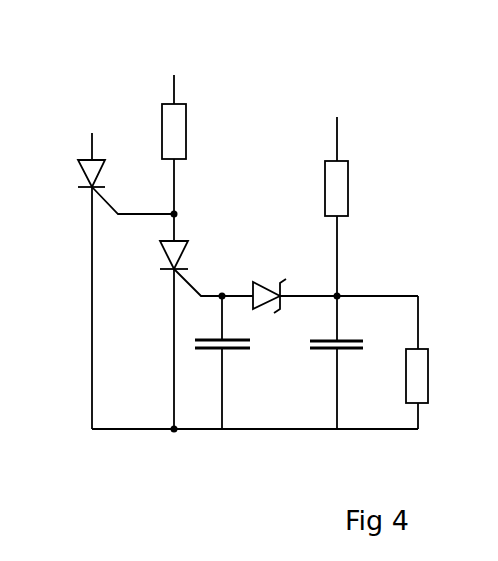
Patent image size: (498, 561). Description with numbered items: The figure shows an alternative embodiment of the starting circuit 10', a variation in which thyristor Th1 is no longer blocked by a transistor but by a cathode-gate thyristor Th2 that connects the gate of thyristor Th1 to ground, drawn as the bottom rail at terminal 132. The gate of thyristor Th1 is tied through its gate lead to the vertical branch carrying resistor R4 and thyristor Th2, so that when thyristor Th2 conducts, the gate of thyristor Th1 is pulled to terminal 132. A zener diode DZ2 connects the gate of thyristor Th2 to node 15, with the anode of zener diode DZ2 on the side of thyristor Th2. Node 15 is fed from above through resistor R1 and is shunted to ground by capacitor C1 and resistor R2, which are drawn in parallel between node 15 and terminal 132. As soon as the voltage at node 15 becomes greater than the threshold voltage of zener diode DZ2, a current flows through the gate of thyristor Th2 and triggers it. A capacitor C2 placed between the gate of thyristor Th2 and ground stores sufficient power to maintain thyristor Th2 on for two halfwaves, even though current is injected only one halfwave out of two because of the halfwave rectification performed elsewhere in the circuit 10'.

The starting circuit 10' is at (386, 104).
The node 15 is at (337, 296).
The ground terminal 132 is at (174, 429).
The resistor R1 is at (353, 206).
The resistor R2 is at (435, 362).
The resistor R4 is at (192, 158).
The capacitor C1 is at (342, 362).
The capacitor C2 is at (226, 362).
The thyristor Th1 is at (126, 281).
The cathode-gate thyristor Th2 is at (206, 334).
The zener diode DZ2 is at (269, 283).